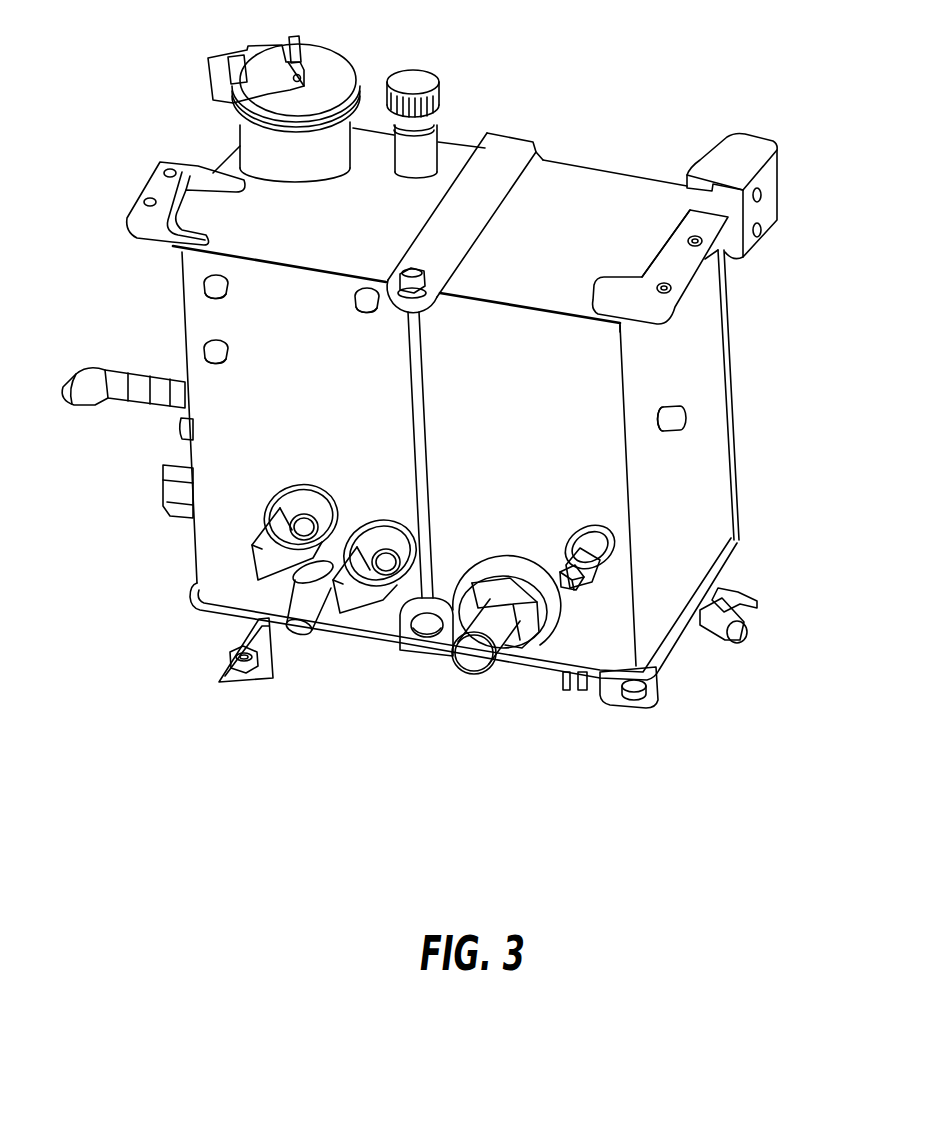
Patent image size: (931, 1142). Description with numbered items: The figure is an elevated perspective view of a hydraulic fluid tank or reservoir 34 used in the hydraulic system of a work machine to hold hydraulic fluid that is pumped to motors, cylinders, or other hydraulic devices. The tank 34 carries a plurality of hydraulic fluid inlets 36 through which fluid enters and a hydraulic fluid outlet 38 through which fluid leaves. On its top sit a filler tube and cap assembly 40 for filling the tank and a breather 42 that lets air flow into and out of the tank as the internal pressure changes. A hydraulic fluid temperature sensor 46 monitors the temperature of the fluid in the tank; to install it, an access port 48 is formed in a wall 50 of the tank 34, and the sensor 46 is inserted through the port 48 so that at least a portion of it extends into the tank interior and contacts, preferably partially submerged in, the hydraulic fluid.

The hydraulic fluid tank 34 is at (605, 184).
The hydraulic fluid inlets 36 is at (253, 540).
The hydraulic fluid outlet 38 is at (498, 633).
The filler tube and cap assembly 40 is at (327, 62).
The breather 42 is at (413, 82).
The hydraulic fluid temperature sensor 46 is at (603, 563).
The access port 48 is at (607, 530).
The wall 50 is at (598, 367).